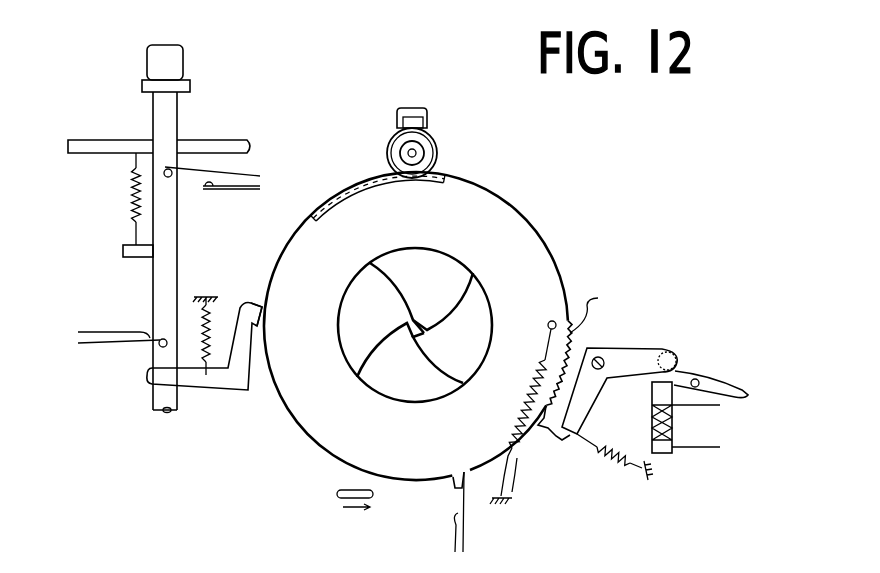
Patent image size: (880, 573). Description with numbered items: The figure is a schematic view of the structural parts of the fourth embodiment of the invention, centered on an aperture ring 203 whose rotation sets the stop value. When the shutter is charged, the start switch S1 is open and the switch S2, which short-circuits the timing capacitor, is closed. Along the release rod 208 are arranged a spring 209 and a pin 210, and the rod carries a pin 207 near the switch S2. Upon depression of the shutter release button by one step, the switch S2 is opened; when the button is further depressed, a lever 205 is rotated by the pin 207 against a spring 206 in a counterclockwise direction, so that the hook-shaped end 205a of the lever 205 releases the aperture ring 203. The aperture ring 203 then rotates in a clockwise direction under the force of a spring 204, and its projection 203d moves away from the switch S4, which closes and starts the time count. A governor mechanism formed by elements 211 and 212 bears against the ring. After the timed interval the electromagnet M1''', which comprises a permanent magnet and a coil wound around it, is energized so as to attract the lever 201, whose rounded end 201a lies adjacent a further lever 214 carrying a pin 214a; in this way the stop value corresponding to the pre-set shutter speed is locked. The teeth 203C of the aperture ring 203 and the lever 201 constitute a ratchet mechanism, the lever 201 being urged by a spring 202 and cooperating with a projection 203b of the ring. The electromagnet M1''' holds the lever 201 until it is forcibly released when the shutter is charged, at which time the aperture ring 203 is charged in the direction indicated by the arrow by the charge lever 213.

The lever 201 is at (617, 358).
The lever rounded end 201a is at (676, 357).
The spring 202 is at (619, 466).
The aperture ring 203 is at (533, 250).
The projection 203b is at (549, 440).
The teeth 203C is at (620, 309).
The projection 203d is at (457, 490).
The spring 204 is at (532, 487).
The lever 205 is at (224, 385).
The hook-shaped end 205a is at (263, 312).
The spring 206 is at (219, 328).
The pin 207 is at (158, 349).
The release rod 208 is at (155, 279).
The spring 209 is at (131, 186).
The pin 210 is at (170, 177).
The governer mechanism 211 is at (438, 147).
The governer mechanism 212 is at (420, 115).
The charge lever 213 is at (338, 492).
The lever 214 is at (716, 385).
The lever pin 214a is at (745, 392).
The start switch S1 is at (217, 194).
The switch S2 is at (119, 322).
The switch S4 is at (477, 514).
The electromagnet M1''' is at (686, 417).